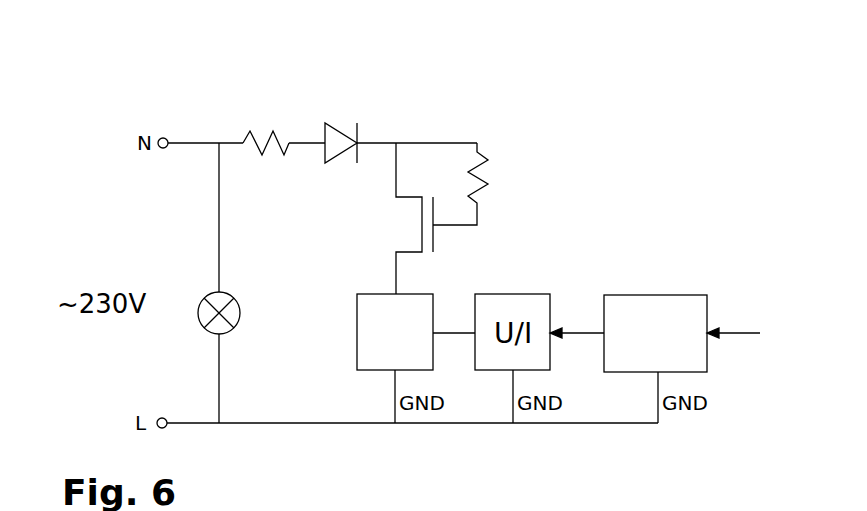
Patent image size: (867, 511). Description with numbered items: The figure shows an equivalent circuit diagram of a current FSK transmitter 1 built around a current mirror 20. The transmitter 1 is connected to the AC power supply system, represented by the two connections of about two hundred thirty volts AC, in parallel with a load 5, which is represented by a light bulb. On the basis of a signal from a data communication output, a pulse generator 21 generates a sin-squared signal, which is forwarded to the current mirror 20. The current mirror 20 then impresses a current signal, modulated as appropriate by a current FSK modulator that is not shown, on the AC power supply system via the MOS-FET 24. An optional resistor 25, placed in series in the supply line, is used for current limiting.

The current FSK transmitter 1 is at (549, 119).
The load 5 is at (203, 315).
The current mirror 20 is at (399, 328).
The pulse generator 21 is at (666, 309).
The MOS-FET 24 is at (403, 221).
The resistor 25 is at (281, 138).